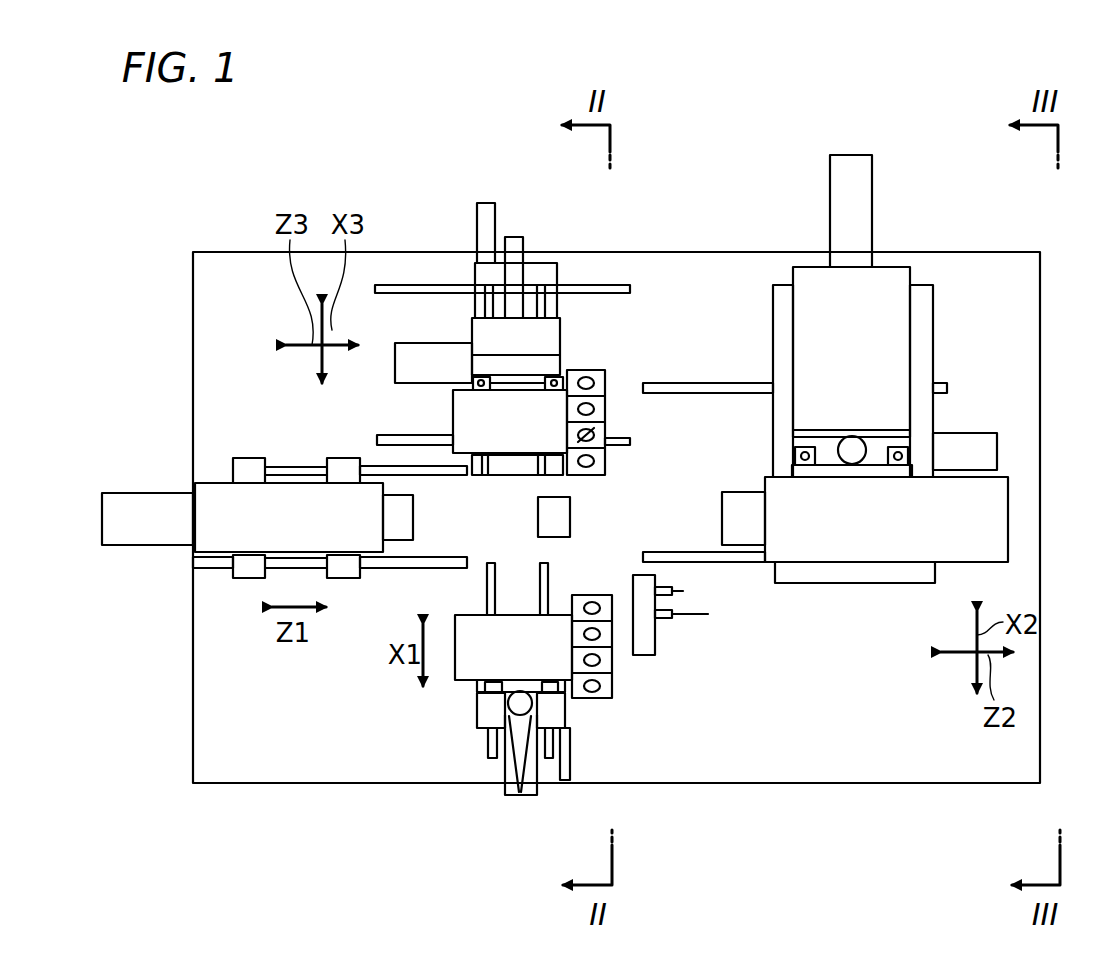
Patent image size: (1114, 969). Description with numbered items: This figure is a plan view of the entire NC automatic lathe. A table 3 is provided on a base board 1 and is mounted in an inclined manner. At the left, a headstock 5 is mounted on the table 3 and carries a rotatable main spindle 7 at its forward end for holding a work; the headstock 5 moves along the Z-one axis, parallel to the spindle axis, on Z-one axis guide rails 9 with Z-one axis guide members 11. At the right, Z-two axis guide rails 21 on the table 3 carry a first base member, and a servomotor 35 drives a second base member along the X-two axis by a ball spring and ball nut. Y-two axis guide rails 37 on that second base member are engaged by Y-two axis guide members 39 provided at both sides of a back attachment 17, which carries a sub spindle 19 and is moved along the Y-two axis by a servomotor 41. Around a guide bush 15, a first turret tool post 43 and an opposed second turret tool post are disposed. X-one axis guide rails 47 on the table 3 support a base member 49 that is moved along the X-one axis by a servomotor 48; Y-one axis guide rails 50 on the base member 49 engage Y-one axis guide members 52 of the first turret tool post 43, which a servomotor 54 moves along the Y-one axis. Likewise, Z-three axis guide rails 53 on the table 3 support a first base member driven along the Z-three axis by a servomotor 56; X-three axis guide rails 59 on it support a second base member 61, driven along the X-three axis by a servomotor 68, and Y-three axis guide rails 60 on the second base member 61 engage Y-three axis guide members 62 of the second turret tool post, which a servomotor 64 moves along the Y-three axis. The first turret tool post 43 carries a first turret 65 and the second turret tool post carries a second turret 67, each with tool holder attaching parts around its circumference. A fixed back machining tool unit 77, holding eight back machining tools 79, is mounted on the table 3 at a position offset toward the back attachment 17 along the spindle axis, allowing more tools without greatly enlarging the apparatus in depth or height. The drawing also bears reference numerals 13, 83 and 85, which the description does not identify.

The base board 1 is at (1040, 750).
The table 3 is at (655, 700).
The headstock 5 is at (245, 535).
The main spindle 7 is at (400, 525).
The Z1 axis guide rail 9 is at (275, 468).
The Z1 axis guide member 11 is at (234, 460).
The drive motor 13 is at (125, 508).
The guide bush 15 is at (572, 520).
The back attachment 17 is at (895, 575).
The sub spindle 19 is at (895, 568).
The Z2 axis guide rail 21 is at (720, 383).
The servomotor 35 is at (840, 195).
The Y2 axis guide rail 37 is at (808, 447).
The Y2 axis guide member 39 is at (913, 462).
The servomotor 41 is at (865, 438).
The first turret tool post 43 is at (468, 668).
The X1 axis guide rail 47 is at (495, 735).
The servomotor 48 is at (512, 780).
The base member 49 is at (485, 715).
The Y1 axis guide rail 50 is at (488, 700).
The Y1 axis guide member 52 is at (521, 708).
The Z3 axis guide rail 53 is at (605, 290).
The servomotor 54 is at (480, 640).
The servomotor 56 is at (465, 365).
The X3 axis guide rail 59 is at (488, 300).
The Y3 axis guide rail 60 is at (478, 472).
The second base member 61 is at (530, 330).
The Y3 axis guide member 62 is at (478, 383).
The servomotor 64 is at (517, 460).
The first turret 65 is at (600, 700).
The second turret 67 is at (590, 370).
The servomotor 68 is at (513, 245).
The fixed back machining tool unit 77 is at (655, 650).
The back machining tool 79 is at (675, 600).
The shaft 83 is at (565, 745).
The shaft 85 is at (486, 230).